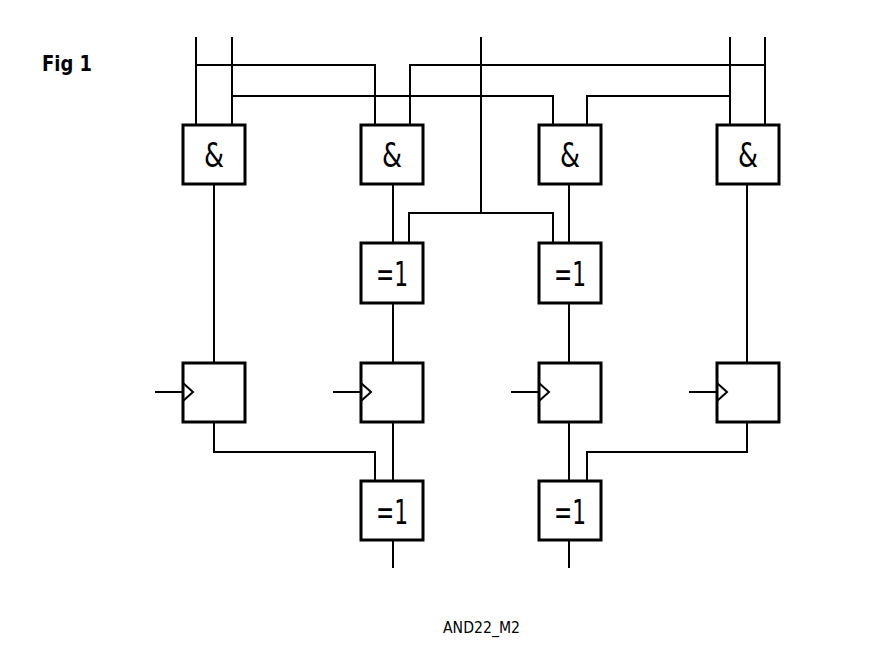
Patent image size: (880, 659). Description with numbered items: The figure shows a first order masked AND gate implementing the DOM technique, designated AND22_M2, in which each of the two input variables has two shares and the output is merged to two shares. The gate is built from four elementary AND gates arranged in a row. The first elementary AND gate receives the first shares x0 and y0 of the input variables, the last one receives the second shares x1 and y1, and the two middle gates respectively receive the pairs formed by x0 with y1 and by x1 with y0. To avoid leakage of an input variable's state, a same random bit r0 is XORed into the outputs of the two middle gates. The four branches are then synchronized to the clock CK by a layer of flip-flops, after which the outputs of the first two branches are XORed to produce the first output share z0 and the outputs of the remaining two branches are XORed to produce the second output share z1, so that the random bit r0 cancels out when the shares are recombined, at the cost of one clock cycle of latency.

The first share of input variable x x0 is at (282, 70).
The first share of input variable y y0 is at (389, 70).
The random bit r0 is at (481, 129).
The second share of input variable x x1 is at (662, 70).
The second share of input variable y y1 is at (591, 70).
The clock CK is at (423, 391).
The first share of output variable z z0 is at (393, 566).
The second share of output variable z z1 is at (569, 566).